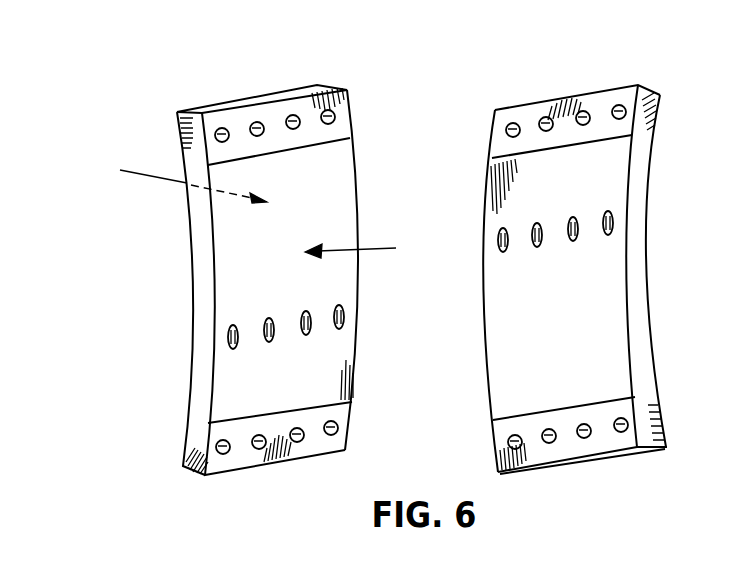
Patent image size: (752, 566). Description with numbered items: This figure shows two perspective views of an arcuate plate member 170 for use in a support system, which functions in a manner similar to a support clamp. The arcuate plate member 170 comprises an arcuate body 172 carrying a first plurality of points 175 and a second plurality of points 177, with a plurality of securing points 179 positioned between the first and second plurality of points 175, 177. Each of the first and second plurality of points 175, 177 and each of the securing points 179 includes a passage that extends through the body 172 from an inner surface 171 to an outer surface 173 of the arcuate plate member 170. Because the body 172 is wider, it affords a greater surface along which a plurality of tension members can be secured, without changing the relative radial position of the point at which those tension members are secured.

The arcuate plate member 170 is at (422, 246).
The inner surface 171 is at (172, 181).
The arcuate body 172 is at (347, 198).
The outer surface 173 is at (370, 246).
The first plurality of points 175 is at (506, 128).
The second plurality of points 177 is at (508, 441).
The plurality of securing points 179 is at (497, 253).